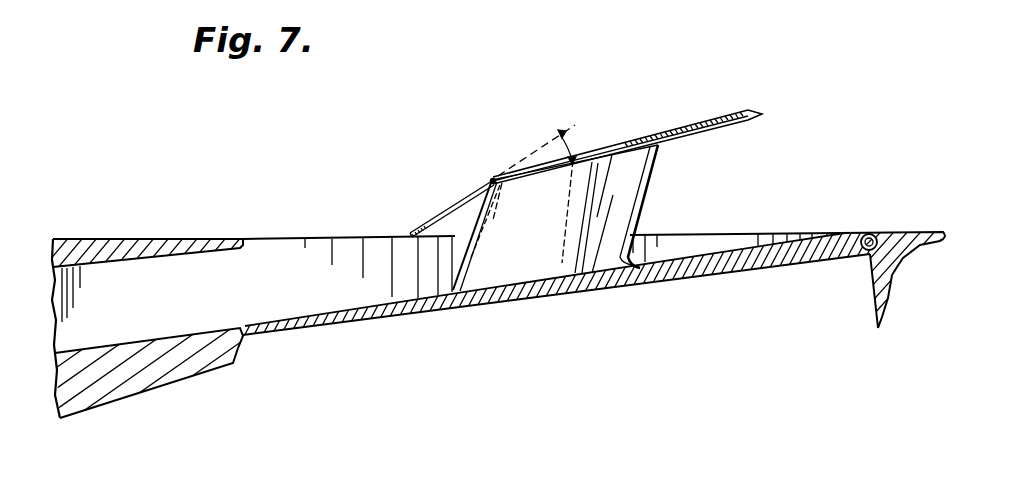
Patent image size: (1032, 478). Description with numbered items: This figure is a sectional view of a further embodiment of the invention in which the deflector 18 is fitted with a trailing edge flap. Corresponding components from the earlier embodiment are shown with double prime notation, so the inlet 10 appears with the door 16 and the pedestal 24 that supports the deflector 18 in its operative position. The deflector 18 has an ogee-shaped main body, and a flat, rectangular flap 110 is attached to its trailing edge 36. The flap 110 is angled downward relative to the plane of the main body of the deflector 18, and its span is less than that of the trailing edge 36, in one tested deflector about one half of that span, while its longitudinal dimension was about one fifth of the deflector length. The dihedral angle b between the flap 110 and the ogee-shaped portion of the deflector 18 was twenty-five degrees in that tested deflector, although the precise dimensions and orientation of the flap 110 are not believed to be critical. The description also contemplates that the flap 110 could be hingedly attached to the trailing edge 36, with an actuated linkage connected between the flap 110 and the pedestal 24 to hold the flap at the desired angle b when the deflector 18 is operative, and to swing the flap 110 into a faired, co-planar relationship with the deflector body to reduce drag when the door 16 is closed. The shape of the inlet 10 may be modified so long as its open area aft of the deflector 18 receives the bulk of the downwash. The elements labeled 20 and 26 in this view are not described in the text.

The inlet 10 is at (251, 240).
The door 16 is at (360, 312).
The deflector 18 is at (695, 118).
The flow passage 20 is at (168, 310).
The pedestal 24 is at (645, 198).
The hinge block 26 is at (937, 233).
The trailing edge 36 is at (490, 178).
The flap 110 is at (442, 207).
The dihedral angle b is at (577, 142).